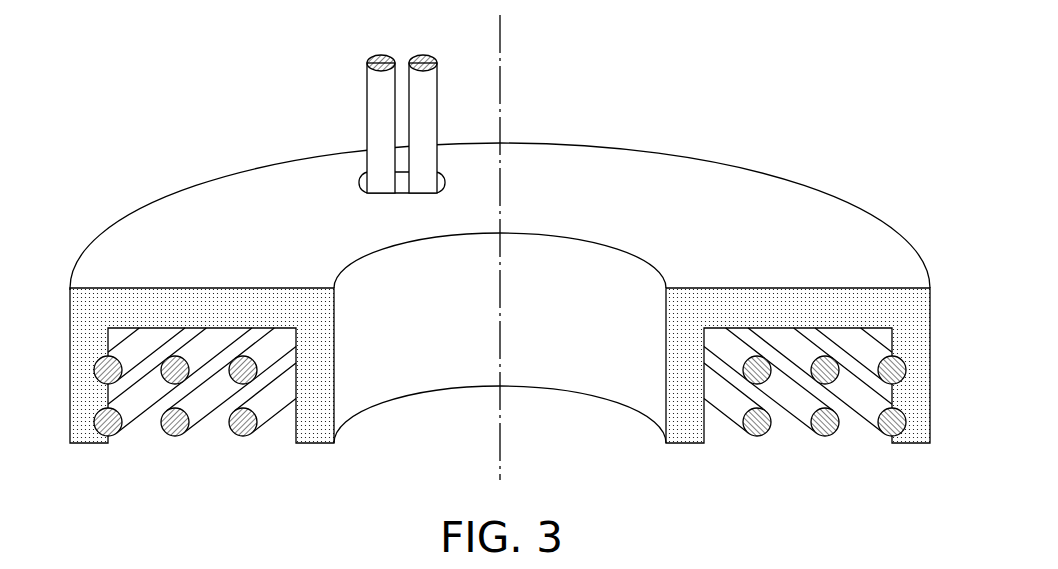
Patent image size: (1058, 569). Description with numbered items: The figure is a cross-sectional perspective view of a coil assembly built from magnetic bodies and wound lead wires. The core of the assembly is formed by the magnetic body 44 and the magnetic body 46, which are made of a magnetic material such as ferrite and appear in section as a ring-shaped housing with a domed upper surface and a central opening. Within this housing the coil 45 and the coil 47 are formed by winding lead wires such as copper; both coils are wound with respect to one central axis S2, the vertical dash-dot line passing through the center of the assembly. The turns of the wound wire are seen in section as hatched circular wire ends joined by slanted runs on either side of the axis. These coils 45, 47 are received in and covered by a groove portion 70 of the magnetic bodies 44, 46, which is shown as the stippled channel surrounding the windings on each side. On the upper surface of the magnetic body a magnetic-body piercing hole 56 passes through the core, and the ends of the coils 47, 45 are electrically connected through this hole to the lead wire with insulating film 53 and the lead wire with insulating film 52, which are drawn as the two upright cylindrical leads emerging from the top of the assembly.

The central axis S2 is at (502, 33).
The magnetic body 44 is at (500, 257).
The magnetic body 46 is at (580, 160).
The coil 45 is at (500, 414).
The coil 47 is at (260, 405).
The groove portion 70 is at (707, 423).
The magnetic-body piercing hole 56 is at (362, 186).
The lead wire with insulating film 52 is at (347, 124).
The lead wire with insulating film 53 is at (380, 86).